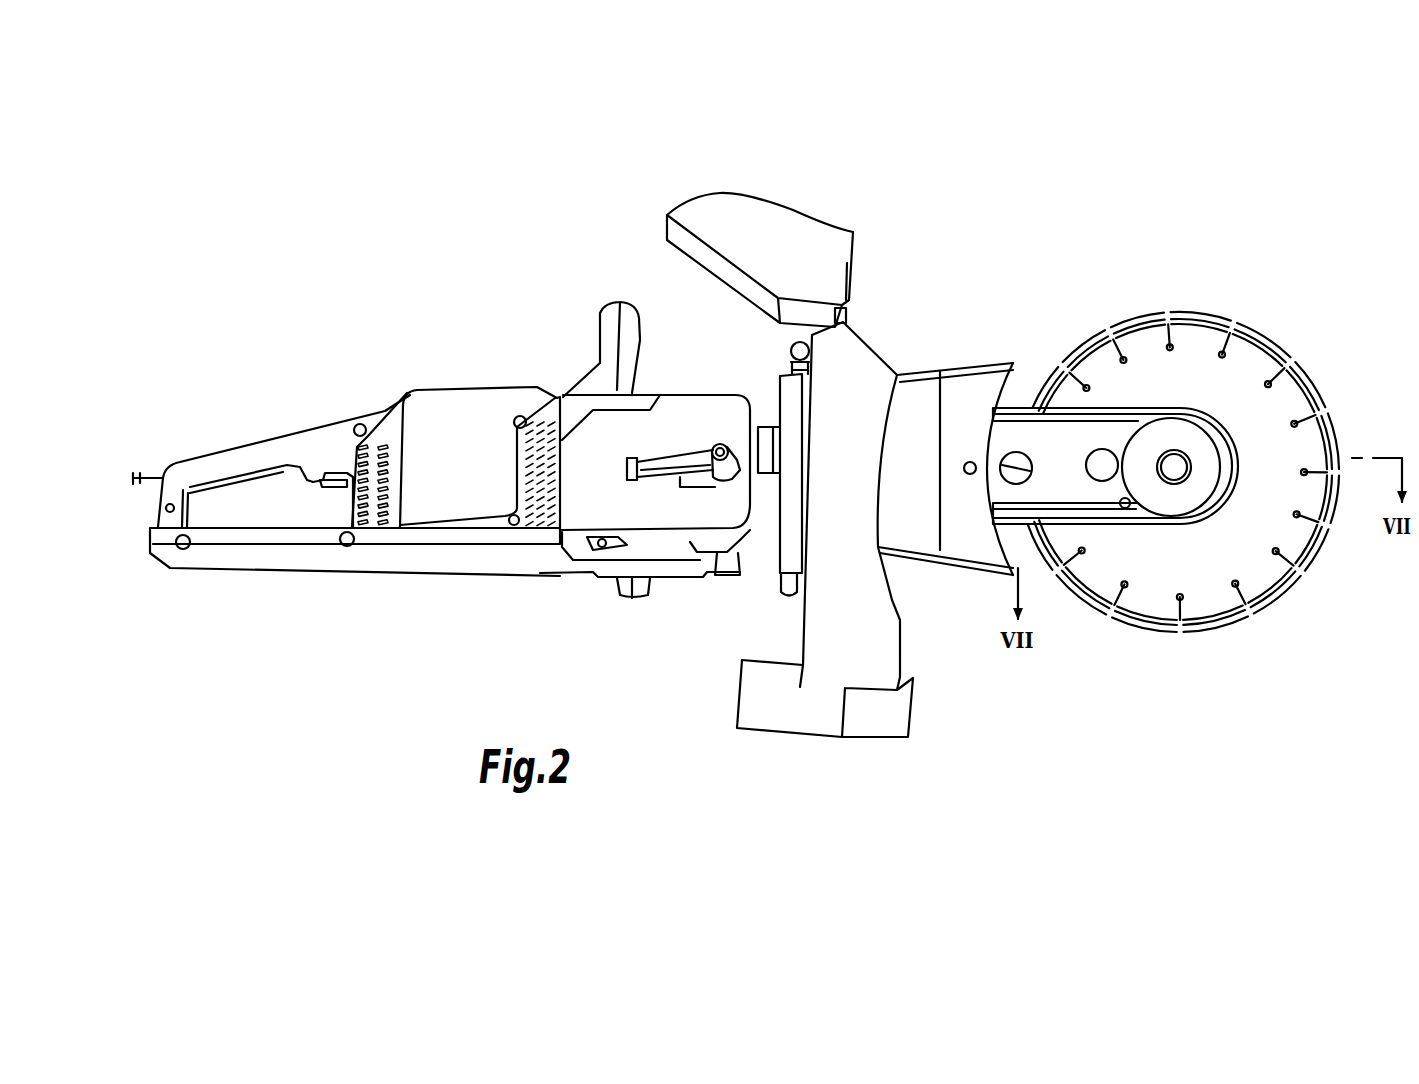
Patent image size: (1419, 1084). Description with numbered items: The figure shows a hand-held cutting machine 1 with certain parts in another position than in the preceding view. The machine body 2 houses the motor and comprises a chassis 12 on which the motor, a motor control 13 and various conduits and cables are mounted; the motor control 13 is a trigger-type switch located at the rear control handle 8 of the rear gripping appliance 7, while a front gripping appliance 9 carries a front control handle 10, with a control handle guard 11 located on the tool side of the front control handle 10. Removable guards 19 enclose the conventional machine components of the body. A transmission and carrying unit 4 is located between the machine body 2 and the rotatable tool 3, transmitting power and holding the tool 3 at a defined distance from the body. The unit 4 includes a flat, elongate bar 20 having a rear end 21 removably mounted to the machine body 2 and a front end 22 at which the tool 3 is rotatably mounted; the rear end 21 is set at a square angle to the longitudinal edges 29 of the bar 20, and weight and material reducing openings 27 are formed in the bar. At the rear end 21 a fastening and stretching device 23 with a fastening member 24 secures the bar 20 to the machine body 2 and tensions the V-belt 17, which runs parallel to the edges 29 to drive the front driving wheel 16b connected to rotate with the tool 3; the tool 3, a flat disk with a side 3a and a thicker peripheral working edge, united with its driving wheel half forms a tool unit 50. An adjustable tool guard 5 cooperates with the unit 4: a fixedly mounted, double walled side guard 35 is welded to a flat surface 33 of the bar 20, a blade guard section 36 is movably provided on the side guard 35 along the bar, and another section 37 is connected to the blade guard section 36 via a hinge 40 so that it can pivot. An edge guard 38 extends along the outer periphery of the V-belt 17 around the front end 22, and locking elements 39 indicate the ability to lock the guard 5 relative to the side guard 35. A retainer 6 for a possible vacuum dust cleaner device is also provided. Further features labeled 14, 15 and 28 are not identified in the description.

The cutting machine 1 is at (473, 319).
The machine body 2 is at (407, 384).
The tool 3 is at (1131, 311).
The side of the tool 3a is at (1305, 440).
The transmission and carrying unit 4 is at (1020, 441).
The adjustable tool guard 5 is at (825, 619).
The retainer 6 is at (890, 722).
The rear gripping appliance 7 is at (259, 398).
The rear control handle 8 is at (213, 461).
The front gripping appliance 9 is at (593, 357).
The front control handle 10 is at (615, 312).
The control handle guard 11 is at (629, 602).
The chassis 12 is at (580, 553).
The motor control 13 is at (328, 490).
The cable 14 is at (150, 477).
The hood section 15 is at (1057, 403).
The front driving wheel 16b is at (1186, 409).
The V-belt 17 is at (1098, 515).
The guards 19 is at (445, 470).
The bar 20 is at (1095, 435).
The rear end 21 is at (763, 424).
The front end 22 is at (1230, 428).
The fastening and stretching device 23 is at (677, 455).
The fastening member 24 is at (718, 446).
The weight and material reducing openings 27 is at (1013, 486).
The hole 28 is at (967, 475).
The longitudinal edges 29 is at (1132, 512).
The flat surface 33 is at (1047, 489).
The side guard 35 is at (970, 392).
The blade guard section 36 is at (848, 488).
The guard section 37 is at (752, 212).
The edge guard 38 is at (1222, 502).
The locking elements 39 is at (783, 587).
The hinge 40 is at (850, 318).
The tool unit 50 is at (1208, 586).